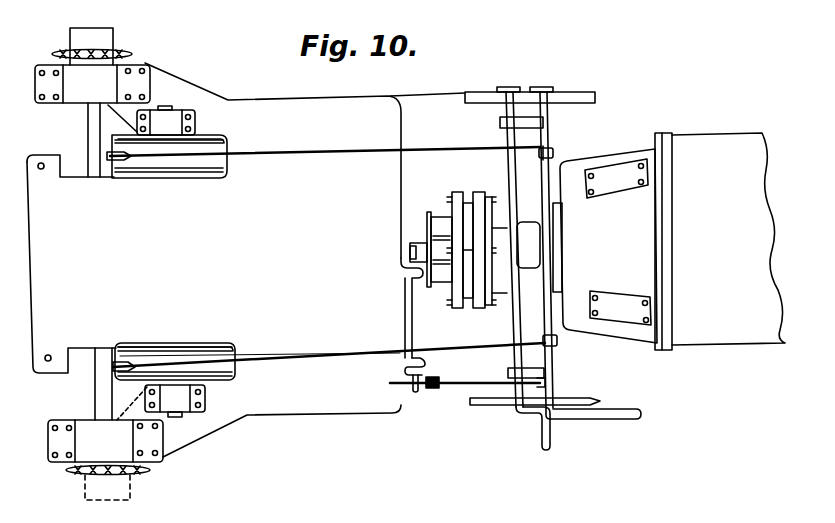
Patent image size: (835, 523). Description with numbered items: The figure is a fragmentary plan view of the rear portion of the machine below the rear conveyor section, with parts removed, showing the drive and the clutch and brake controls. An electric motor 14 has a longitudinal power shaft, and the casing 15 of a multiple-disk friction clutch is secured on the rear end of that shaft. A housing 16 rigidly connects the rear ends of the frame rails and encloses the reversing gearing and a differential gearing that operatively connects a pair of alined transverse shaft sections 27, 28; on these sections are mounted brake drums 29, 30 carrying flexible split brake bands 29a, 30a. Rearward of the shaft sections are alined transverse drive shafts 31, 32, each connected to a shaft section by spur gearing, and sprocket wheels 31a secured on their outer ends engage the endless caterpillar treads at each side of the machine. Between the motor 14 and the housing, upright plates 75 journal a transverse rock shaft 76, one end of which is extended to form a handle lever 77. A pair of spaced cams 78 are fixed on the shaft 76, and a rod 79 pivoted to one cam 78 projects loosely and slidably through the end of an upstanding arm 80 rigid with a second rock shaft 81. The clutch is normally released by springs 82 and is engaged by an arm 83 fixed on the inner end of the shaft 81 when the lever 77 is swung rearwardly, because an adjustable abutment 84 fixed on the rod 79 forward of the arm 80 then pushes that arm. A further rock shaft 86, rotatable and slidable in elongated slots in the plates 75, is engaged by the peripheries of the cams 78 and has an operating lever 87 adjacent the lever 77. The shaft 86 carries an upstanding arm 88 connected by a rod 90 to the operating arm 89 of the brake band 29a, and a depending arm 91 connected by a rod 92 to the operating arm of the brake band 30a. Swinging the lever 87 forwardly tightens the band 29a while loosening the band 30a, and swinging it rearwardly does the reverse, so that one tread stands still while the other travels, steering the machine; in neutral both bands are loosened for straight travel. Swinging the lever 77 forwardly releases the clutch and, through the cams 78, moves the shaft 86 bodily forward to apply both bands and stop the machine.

The motor 14 is at (672, 241).
The casing 15 is at (478, 192).
The housing 16 is at (246, 260).
The shaft section 27 is at (177, 417).
The shaft section 28 is at (170, 107).
The brake drum 29 is at (222, 376).
The brake band 29a is at (236, 347).
The brake drum 30 is at (220, 176).
The brake band 30a is at (229, 141).
The drive shaft 31 is at (100, 409).
The sprocket wheel 31a is at (118, 55).
The drive shaft 32 is at (88, 127).
The upright plate 75 is at (583, 92).
The rock shaft 76 is at (514, 327).
The lever 77 is at (538, 430).
The cam 78 is at (500, 122).
The rod 79 is at (473, 387).
The upstanding arm 80 is at (416, 394).
The second rock shaft 81 is at (413, 328).
The spring 82 is at (437, 215).
The arm 83 is at (397, 303).
The adjustable abutment 84 is at (433, 390).
The rock shaft 86 is at (554, 355).
The operating lever 87 is at (620, 419).
The upstanding arm 88 is at (558, 340).
The operating arm 89 is at (115, 367).
The rod 90 is at (355, 360).
The depending arm 91 is at (554, 152).
The rod 92 is at (328, 152).